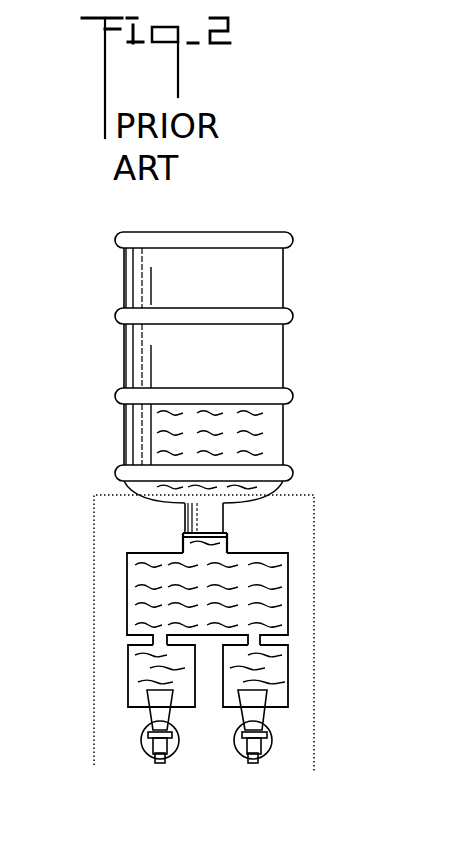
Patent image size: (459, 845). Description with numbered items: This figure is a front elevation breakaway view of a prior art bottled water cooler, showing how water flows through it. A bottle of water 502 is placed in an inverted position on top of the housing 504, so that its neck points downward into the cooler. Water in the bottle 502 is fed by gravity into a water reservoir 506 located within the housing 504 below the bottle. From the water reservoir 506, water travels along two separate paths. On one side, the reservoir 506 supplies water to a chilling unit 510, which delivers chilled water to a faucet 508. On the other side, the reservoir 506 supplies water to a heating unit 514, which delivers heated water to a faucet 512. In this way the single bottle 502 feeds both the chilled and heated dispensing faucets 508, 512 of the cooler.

The bottle of water 502 is at (285, 382).
The housing 504 is at (93, 619).
The water reservoir 506 is at (228, 612).
The faucet 508 is at (163, 743).
The chilling unit 510 is at (147, 679).
The faucet 512 is at (253, 743).
The heating unit 514 is at (265, 672).